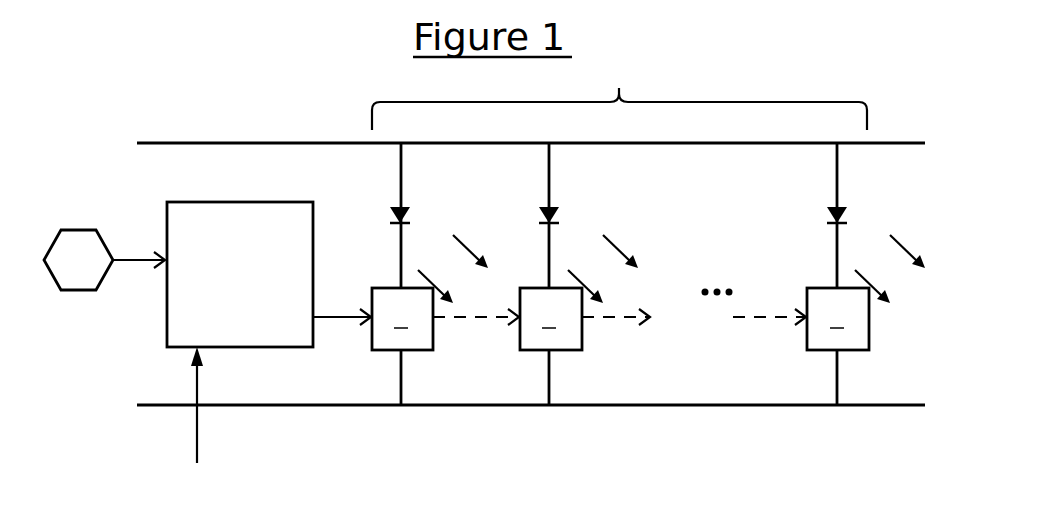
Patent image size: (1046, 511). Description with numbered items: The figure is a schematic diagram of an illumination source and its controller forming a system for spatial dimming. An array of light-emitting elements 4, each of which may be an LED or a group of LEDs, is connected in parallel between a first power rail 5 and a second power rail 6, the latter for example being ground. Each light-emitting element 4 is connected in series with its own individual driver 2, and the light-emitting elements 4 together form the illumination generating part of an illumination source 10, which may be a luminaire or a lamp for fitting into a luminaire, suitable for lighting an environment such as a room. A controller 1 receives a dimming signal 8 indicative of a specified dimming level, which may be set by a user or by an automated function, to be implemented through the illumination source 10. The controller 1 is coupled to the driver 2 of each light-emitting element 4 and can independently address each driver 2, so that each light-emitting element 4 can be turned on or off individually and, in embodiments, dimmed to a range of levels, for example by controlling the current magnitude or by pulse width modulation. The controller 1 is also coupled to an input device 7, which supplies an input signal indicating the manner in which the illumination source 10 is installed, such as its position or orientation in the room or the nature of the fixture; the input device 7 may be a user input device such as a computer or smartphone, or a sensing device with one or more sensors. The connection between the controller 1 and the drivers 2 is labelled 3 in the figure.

The controller 1 is at (252, 202).
The driver 2 is at (648, 274).
The data line 3 is at (330, 318).
The light-emitting element 4 is at (392, 216).
The first power rail 5 is at (193, 143).
The second power rail 6 is at (256, 405).
The input device 7 is at (82, 290).
The dimming signal 8 is at (196, 438).
The illumination source 10 is at (619, 98).